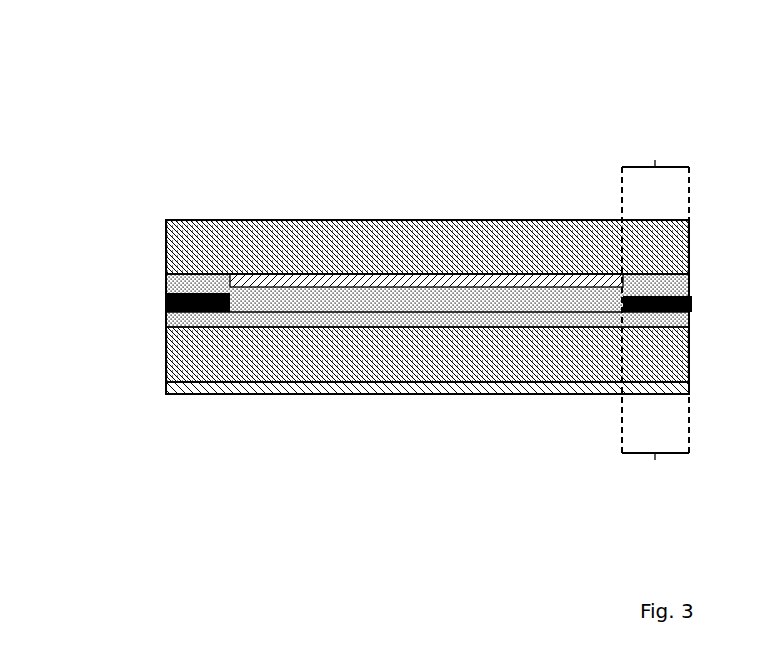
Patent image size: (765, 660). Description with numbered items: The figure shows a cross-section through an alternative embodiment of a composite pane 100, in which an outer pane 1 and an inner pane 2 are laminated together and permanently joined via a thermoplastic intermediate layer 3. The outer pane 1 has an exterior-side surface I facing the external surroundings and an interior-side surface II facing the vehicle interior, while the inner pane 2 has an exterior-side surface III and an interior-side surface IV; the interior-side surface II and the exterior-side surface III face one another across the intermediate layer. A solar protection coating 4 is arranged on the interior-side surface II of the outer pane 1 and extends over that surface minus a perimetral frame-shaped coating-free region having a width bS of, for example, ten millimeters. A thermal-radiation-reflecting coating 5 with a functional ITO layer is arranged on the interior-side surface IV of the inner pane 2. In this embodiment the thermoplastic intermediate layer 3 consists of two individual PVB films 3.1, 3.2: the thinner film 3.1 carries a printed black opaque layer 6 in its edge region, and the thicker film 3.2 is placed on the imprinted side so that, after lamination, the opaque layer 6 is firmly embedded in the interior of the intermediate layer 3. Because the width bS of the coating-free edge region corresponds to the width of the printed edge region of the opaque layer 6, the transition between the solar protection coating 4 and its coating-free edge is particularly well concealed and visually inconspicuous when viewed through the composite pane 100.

The composite pane 100 is at (159, 75).
The outer pane 1 is at (197, 250).
The inner pane 2 is at (192, 352).
The thermoplastic intermediate layer 3 is at (362, 292).
The individual film 3.1 is at (175, 322).
The individual film 3.2 is at (184, 283).
The solar protection coating 4 is at (355, 283).
The thermal-radiation-reflecting coating 5 is at (528, 395).
The opaque layer 6 is at (167, 304).
The exterior-side surface I is at (486, 207).
The interior-side surface II is at (556, 262).
The exterior-side surface III is at (368, 339).
The interior-side surface IV is at (446, 397).
The width of the coating-free edge region bS is at (655, 293).